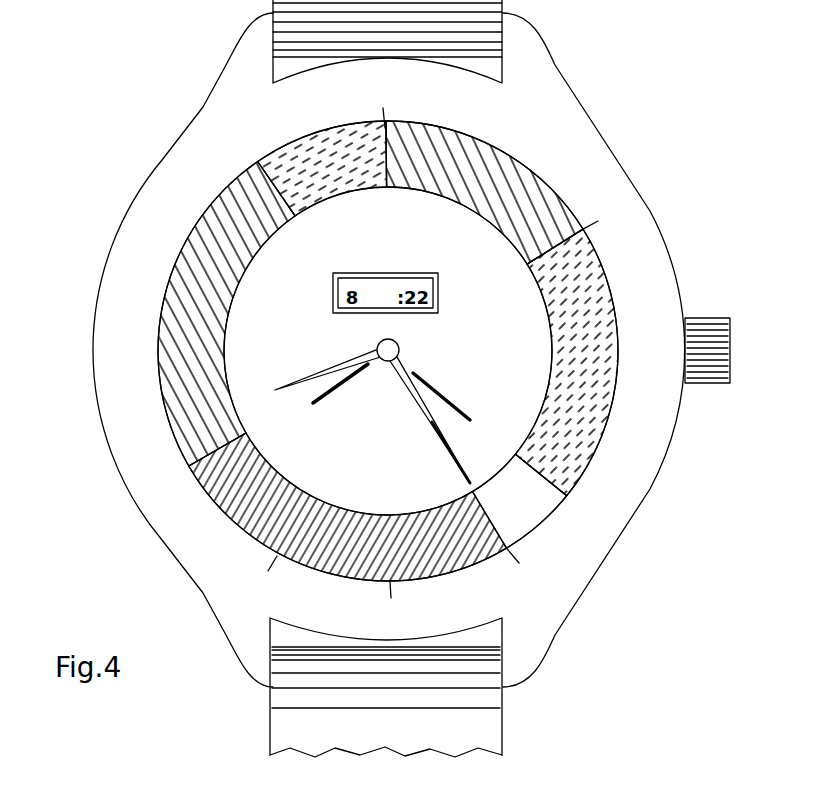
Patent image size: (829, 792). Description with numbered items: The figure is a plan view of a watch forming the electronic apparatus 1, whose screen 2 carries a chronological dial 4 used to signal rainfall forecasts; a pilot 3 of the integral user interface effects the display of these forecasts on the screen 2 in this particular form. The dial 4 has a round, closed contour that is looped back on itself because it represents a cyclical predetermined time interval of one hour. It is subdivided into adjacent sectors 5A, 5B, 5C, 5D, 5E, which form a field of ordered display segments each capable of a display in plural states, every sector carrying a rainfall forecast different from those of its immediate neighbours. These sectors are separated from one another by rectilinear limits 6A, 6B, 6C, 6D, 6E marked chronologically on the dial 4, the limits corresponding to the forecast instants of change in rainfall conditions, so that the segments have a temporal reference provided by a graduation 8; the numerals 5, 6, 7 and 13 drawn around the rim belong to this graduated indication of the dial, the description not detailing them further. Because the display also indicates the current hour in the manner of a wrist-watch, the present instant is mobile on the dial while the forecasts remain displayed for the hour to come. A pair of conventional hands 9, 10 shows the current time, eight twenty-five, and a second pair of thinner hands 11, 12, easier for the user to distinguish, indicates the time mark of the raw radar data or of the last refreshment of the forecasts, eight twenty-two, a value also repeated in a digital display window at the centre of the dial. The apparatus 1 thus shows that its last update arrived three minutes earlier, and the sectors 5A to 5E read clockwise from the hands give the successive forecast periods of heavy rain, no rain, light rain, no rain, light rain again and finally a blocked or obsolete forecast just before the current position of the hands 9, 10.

The electronic device 1 is at (201, 109).
The screen 2 is at (601, 219).
The pilot 3 is at (187, 214).
The chronological dial 4 is at (557, 193).
The 5 o'clock position 5 is at (520, 567).
The sector 5A is at (410, 189).
The sector 5B is at (554, 350).
The sector 5C is at (343, 517).
The sector 5D is at (216, 292).
The sector 5E is at (359, 190).
The 6 o'clock position 6 is at (392, 602).
The limit 6A is at (526, 263).
The limit 6B is at (490, 508).
The limit 6C is at (197, 477).
The limit 6D is at (266, 178).
The limit 6E is at (380, 130).
The 7 o'clock position 7 is at (267, 576).
The graduation 8 is at (530, 133).
The hand 9 is at (310, 372).
The hand 10 is at (428, 430).
The hand 11 is at (344, 386).
The hand 12 is at (438, 390).
The 12 o'clock position 13 is at (382, 107).